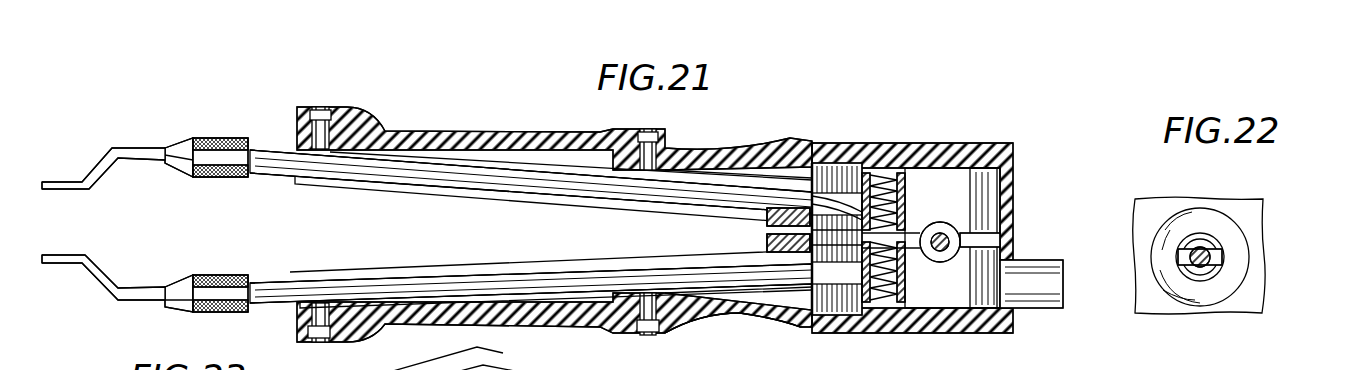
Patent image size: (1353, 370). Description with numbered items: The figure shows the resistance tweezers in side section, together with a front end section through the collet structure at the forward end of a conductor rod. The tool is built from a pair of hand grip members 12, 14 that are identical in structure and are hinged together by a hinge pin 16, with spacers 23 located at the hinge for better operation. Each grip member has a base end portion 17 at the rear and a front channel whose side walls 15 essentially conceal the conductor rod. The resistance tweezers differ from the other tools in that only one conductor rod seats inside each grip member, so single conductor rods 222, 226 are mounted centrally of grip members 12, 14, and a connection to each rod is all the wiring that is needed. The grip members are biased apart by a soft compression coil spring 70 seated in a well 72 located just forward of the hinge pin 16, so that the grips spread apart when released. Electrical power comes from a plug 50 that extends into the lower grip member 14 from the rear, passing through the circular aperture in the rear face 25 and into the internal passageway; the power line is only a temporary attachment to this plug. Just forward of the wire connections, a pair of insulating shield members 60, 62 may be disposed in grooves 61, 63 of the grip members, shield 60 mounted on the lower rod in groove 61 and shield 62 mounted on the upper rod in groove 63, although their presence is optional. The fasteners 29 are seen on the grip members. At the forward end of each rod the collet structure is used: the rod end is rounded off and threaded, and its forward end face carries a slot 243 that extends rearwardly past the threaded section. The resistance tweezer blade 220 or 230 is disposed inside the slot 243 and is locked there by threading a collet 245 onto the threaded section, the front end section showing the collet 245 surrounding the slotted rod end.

In FIG. 21, the hand grip member 12 is at (462, 118).
In FIG. 21, the hand grip member 14 is at (528, 322).
In FIG. 21, the side walls 15 is at (556, 228).
In FIG. 21, the hinge pin 16 is at (940, 257).
In FIG. 21, the base end portion 17 is at (897, 150).
In FIG. 21, the spacers 23 is at (940, 224).
In FIG. 21, the rear face 25 is at (1003, 229).
In FIG. 21, the screw 29 is at (340, 95).
In FIG. 21, the plug 50 is at (1030, 310).
In FIG. 21, the shield member 60 is at (802, 333).
In FIG. 21, the groove 61 is at (812, 166).
In FIG. 21, the shield member 62 is at (787, 149).
In FIG. 21, the groove 63 is at (798, 245).
In FIG. 21, the spring 70 is at (908, 187).
In FIG. 21, the well 72 is at (865, 217).
In FIG. 21, the dental tool tip 220 is at (118, 147).
In FIG. 22, the dental tool tip 220 is at (1212, 268).
In FIG. 21, the conductor rod 222 is at (390, 175).
In FIG. 21, the conductor rod 226 is at (418, 272).
In FIG. 21, the dental tool tip 230 is at (158, 255).
In FIG. 22, the slot 243 is at (1218, 249).
In FIG. 21, the collet 245 is at (250, 113).
In FIG. 22, the collet 245 is at (1237, 226).